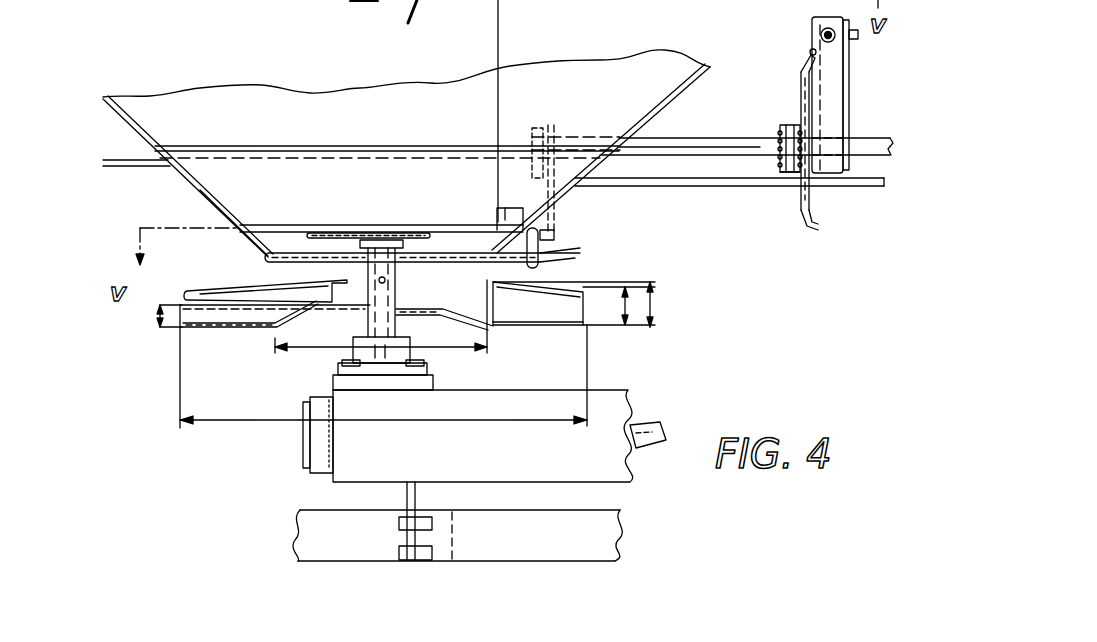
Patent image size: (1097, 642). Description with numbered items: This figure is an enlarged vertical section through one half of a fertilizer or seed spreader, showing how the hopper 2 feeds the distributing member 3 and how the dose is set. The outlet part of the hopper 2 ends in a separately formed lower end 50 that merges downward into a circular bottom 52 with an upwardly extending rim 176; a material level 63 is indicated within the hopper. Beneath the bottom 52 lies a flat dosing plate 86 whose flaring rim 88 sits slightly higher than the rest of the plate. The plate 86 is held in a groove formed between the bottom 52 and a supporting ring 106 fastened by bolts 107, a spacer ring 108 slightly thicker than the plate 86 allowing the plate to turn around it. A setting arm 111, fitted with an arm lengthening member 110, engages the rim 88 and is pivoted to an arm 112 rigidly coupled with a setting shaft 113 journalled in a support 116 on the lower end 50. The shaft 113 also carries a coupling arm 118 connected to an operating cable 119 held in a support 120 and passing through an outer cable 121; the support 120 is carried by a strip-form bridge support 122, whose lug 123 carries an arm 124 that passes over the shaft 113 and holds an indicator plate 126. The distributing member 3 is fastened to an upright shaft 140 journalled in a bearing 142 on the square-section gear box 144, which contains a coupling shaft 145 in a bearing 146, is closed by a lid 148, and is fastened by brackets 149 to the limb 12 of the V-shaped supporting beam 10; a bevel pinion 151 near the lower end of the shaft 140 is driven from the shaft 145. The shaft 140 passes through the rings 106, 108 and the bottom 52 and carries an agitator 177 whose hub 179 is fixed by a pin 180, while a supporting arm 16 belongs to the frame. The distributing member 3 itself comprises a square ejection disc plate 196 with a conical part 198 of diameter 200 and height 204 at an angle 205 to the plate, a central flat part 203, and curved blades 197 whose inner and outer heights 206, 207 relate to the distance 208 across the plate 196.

The hopper 2 is at (153, 92).
The distributing member 3 is at (180, 327).
The V-shaped supporting beam 10 is at (612, 553).
The limb 12 is at (305, 520).
The supporting arm 16 is at (148, 168).
The lower end of outlet part 50 is at (233, 163).
The bottom 52 is at (271, 217).
The material level 63 is at (320, 100).
The dosing plate 86 is at (264, 259).
The flaring rim 88 is at (560, 250).
The supporting ring 106 is at (313, 267).
The bolt 107 is at (432, 270).
The spacer ring 108 is at (350, 233).
The arm lengthening member 110 is at (497, 208).
The setting arm 111 is at (543, 260).
The arm 112 is at (557, 128).
The setting shaft 113 is at (682, 142).
The support 116 is at (538, 128).
The coupling arm 118 is at (847, 96).
The operating cable 119 is at (821, 36).
The support 120 is at (812, 58).
The outer cable 121 is at (830, 28).
The bridge support 122 is at (707, 186).
The lug 123 is at (790, 184).
The arm 124 is at (780, 127).
The indicator plate 126 is at (818, 226).
The upright shaft 140 is at (380, 320).
The bearing 142 is at (400, 372).
The gear box 144 is at (615, 400).
The coupling shaft 145 is at (657, 428).
The bearing 146 is at (315, 452).
The lid 148 is at (302, 408).
The bracket 149 is at (405, 495).
The bevel pinion 151 is at (398, 538).
The upwardly extending rim 176 is at (418, 233).
The agitator 177 is at (318, 240).
The hub 179 is at (410, 284).
The pin 180 is at (393, 237).
The ejection disc plate 196 is at (383, 376).
The curved blade 197 is at (198, 290).
The conical part 198 is at (495, 312).
The diameter of the conical part 200 is at (341, 350).
The flat part 203 is at (428, 313).
The height of the conical part 204 is at (157, 314).
The angle 205 is at (238, 330).
The inner blade height 206 is at (651, 305).
The outer blade height 207 is at (619, 306).
The distance between opposite sides 208 is at (443, 422).